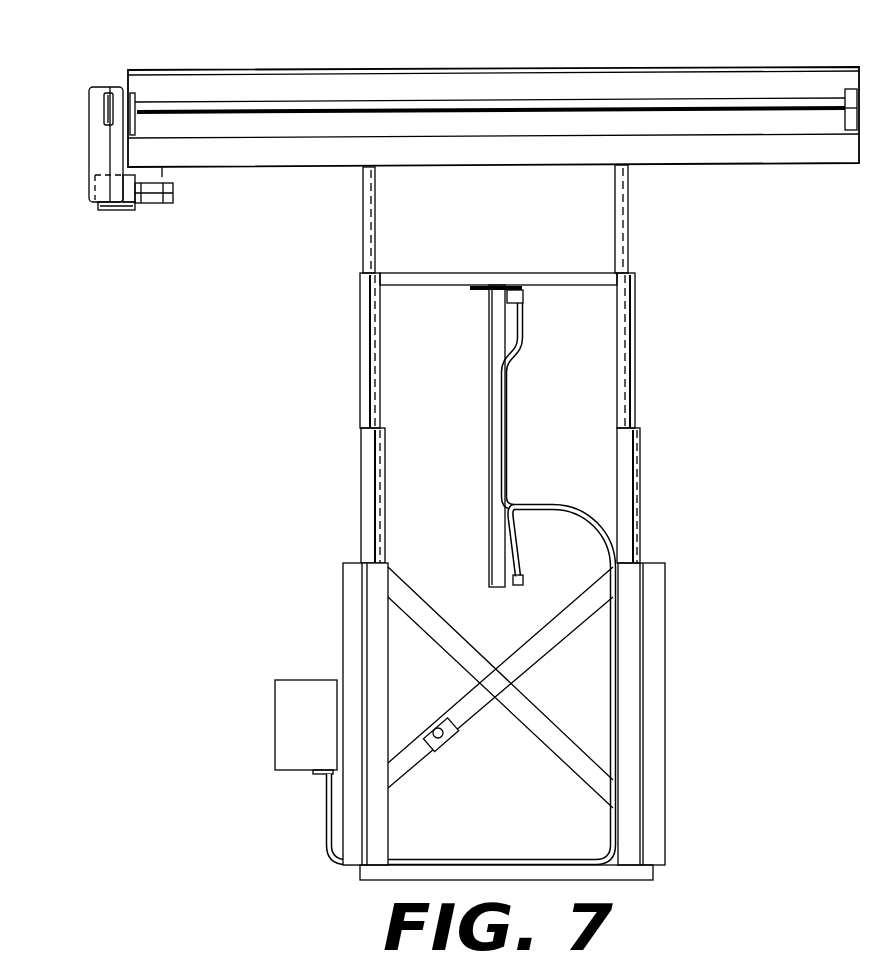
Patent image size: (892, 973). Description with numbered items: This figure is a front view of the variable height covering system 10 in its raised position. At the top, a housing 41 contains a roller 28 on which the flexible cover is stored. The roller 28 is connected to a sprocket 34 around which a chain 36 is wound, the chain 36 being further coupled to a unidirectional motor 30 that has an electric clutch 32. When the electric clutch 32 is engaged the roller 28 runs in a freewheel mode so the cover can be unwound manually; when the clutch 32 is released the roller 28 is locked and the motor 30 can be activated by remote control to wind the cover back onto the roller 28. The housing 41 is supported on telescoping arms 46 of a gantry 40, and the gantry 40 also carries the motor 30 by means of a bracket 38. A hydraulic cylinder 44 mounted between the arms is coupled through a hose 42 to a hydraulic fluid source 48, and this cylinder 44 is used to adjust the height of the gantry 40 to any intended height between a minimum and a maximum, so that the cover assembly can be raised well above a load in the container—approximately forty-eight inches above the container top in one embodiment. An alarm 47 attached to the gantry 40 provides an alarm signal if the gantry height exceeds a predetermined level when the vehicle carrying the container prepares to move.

The covering system 10 is at (523, 41).
The roller 28 is at (748, 103).
The unidirectional motor 30 is at (147, 205).
The electric clutch 32 is at (117, 212).
The sprocket 34 is at (104, 108).
The chain 36 is at (110, 146).
The bracket 38 is at (162, 177).
The gantry 40 is at (262, 872).
The housing 41 is at (178, 70).
The hose 42 is at (598, 526).
The hydraulic cylinder 44 is at (505, 587).
The telescoping arms 46 is at (380, 381).
The alarm 47 is at (447, 745).
The hydraulic fluid source 48 is at (325, 734).